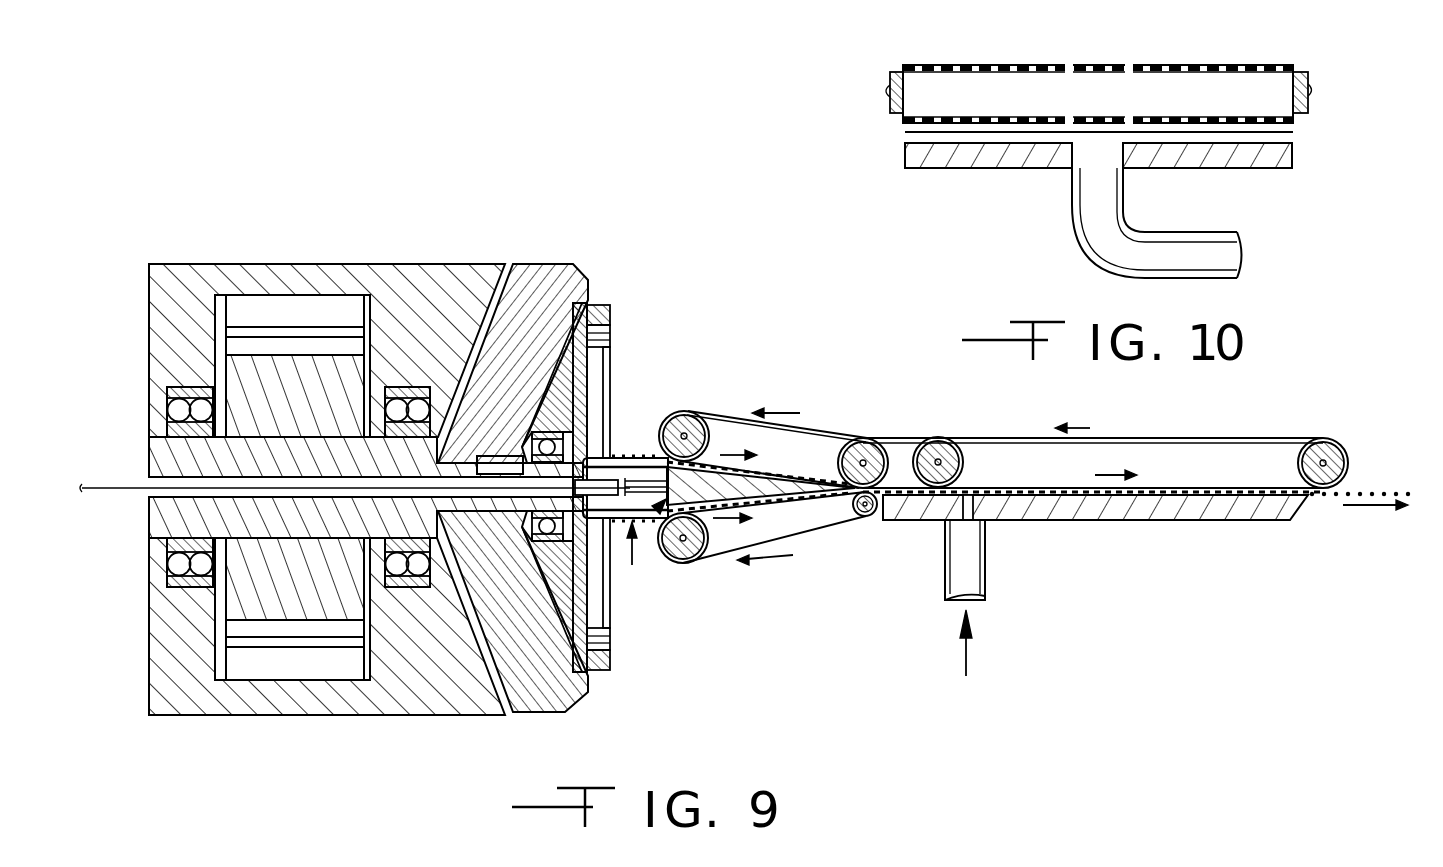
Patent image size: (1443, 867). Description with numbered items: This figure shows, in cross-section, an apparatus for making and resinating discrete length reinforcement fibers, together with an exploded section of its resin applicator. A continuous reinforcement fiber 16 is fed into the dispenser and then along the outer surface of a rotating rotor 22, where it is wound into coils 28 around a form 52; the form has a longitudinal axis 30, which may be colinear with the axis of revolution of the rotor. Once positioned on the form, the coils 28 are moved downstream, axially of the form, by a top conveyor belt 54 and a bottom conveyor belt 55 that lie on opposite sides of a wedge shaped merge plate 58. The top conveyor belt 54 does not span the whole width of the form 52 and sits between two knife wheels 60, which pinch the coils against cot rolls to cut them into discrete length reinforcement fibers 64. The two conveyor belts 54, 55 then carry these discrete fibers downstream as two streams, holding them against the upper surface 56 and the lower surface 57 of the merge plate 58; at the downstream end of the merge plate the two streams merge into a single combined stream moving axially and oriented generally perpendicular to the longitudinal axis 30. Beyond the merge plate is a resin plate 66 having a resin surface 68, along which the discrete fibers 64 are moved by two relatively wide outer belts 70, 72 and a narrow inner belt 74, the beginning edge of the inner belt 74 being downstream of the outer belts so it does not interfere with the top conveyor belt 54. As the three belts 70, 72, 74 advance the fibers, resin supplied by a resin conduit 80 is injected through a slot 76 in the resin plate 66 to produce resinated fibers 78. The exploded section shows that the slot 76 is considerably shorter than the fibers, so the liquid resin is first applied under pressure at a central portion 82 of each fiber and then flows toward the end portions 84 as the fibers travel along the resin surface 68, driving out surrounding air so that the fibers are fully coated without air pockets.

In FIG. 9, the continuous reinforcement fiber 16 is at (172, 488).
In FIG. 9, the rotor 22 is at (530, 264).
In FIG. 9, the coils 28 is at (640, 460).
In FIG. 9, the longitudinal axis 30 is at (348, 478).
In FIG. 9, the form 52 is at (632, 565).
In FIG. 9, the top conveyor belt 54 is at (720, 412).
In FIG. 9, the bottom conveyor belt 55 is at (710, 560).
In FIG. 9, the upper surface 56 is at (745, 462).
In FIG. 9, the lower surface 57 is at (800, 515).
In FIG. 9, the wedge shaped merge plate 58 is at (667, 505).
In FIG. 9, the knife wheels 60 is at (645, 485).
In FIG. 10, the discrete length reinforcement fibers 64 is at (893, 129).
In FIG. 9, the resin plate 66 is at (1238, 530).
In FIG. 10, the resin plate 66 is at (1258, 172).
In FIG. 9, the resin surface 68 is at (1150, 497).
In FIG. 10, the resin surface 68 is at (978, 143).
In FIG. 9, the outer belt 70 is at (890, 436).
In FIG. 10, the outer belt 70 is at (920, 57).
In FIG. 10, the outer belt 72 is at (1300, 62).
In FIG. 9, the inner belt 74 is at (1258, 438).
In FIG. 10, the inner belt 74 is at (1085, 68).
In FIG. 9, the slot 76 is at (958, 505).
In FIG. 10, the slot 76 is at (1092, 152).
In FIG. 9, the resinated fibers 78 is at (1355, 493).
In FIG. 9, the resin conduit 80 is at (985, 542).
In FIG. 10, the resin conduit 80 is at (1213, 278).
In FIG. 10, the central portion 82 is at (1090, 118).
In FIG. 10, the end portions 84 is at (966, 92).